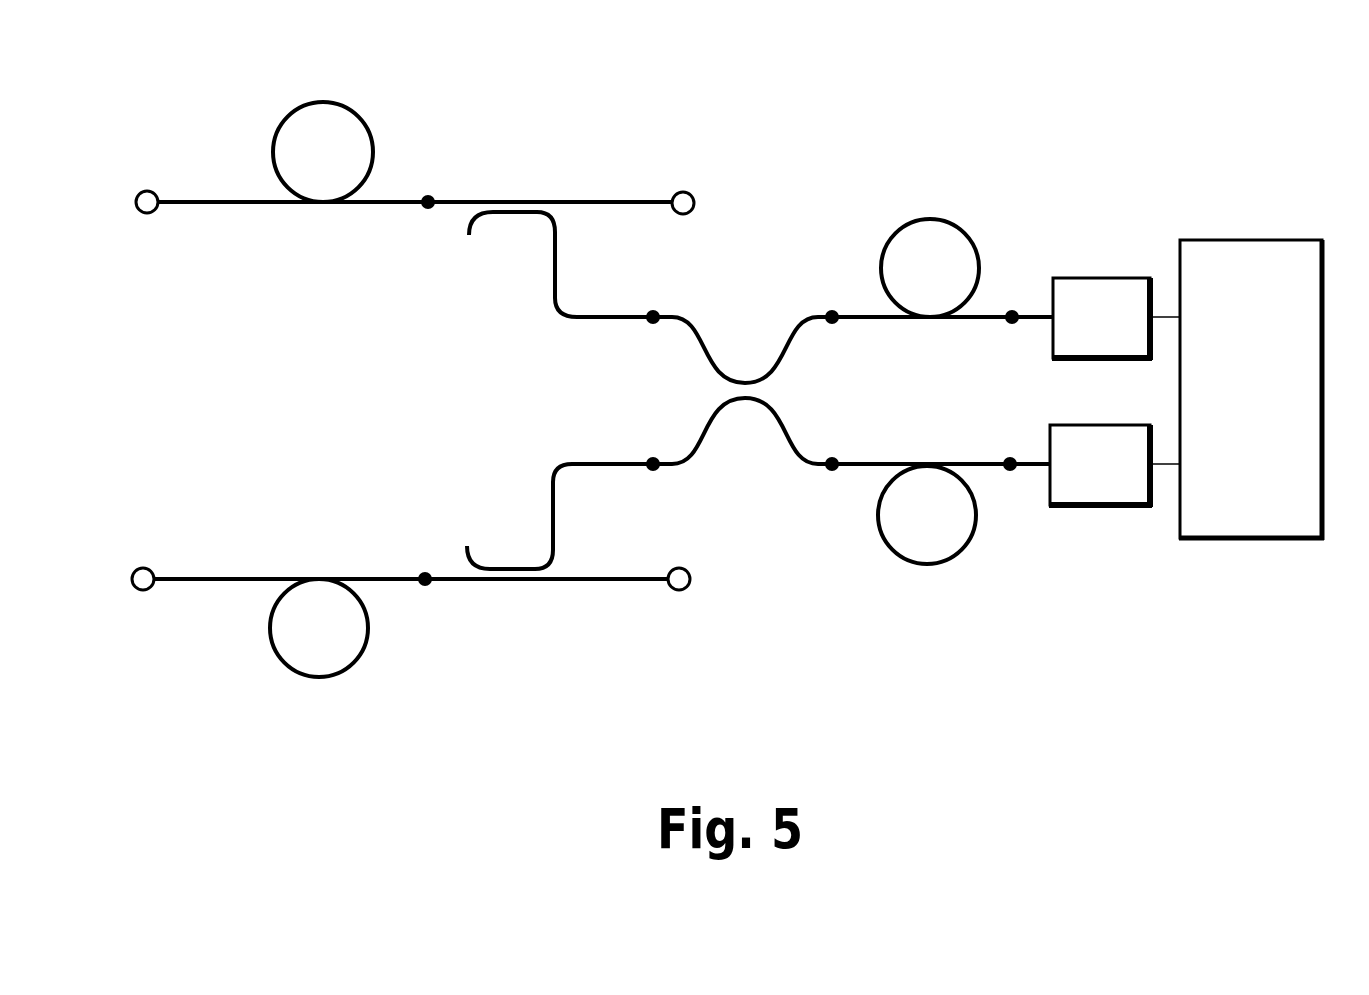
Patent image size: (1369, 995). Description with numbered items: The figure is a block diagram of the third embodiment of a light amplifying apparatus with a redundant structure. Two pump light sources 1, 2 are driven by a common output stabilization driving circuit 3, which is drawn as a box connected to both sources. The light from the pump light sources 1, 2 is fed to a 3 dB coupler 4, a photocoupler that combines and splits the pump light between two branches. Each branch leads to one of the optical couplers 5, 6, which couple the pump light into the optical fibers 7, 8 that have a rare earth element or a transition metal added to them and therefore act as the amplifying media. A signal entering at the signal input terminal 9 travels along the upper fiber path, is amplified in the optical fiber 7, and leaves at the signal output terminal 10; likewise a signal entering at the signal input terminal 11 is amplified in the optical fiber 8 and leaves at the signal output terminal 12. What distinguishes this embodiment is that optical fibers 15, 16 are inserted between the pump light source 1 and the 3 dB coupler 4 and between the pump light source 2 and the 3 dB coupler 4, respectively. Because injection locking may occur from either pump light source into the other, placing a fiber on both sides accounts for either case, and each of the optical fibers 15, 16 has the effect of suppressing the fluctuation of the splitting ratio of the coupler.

The pump light source 1 is at (1085, 277).
The pump light source 2 is at (1097, 507).
The output stabilization driving circuit 3 is at (1231, 239).
The 3 dB coupler 4 is at (705, 333).
The optical coupler 5 is at (500, 200).
The optical coupler 6 is at (538, 582).
The optical fiber with a rare earth element added 7 is at (328, 103).
The optical fiber with a rare earth element added 8 is at (300, 676).
The signal input terminal 9 is at (150, 191).
The signal output terminal 10 is at (687, 192).
The signal input terminal 11 is at (148, 569).
The signal output terminal 12 is at (671, 592).
The optical fiber 15 is at (927, 220).
The optical fiber 16 is at (920, 565).